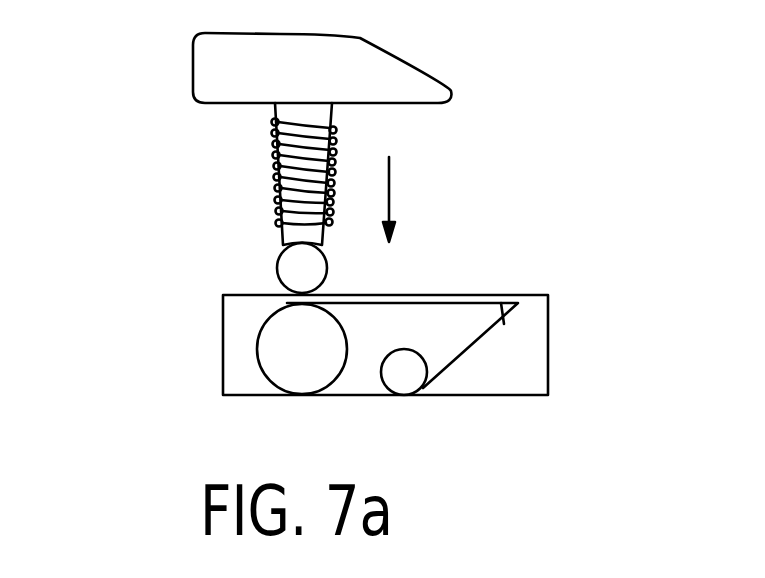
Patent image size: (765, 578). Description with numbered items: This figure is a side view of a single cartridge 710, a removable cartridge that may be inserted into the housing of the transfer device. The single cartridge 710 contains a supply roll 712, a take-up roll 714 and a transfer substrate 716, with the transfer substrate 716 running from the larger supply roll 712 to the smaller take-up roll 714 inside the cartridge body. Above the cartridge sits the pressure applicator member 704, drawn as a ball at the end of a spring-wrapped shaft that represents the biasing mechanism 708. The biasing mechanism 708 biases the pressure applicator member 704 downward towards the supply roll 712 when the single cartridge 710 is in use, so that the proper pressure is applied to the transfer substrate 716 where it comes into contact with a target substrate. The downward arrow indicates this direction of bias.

The pressure applicator member 704 is at (290, 267).
The biasing mechanism 708 is at (277, 147).
The single cartridge 710 is at (299, 340).
The supply roll 712 is at (275, 355).
The take-up roll 714 is at (404, 380).
The transfer substrate 716 is at (440, 297).